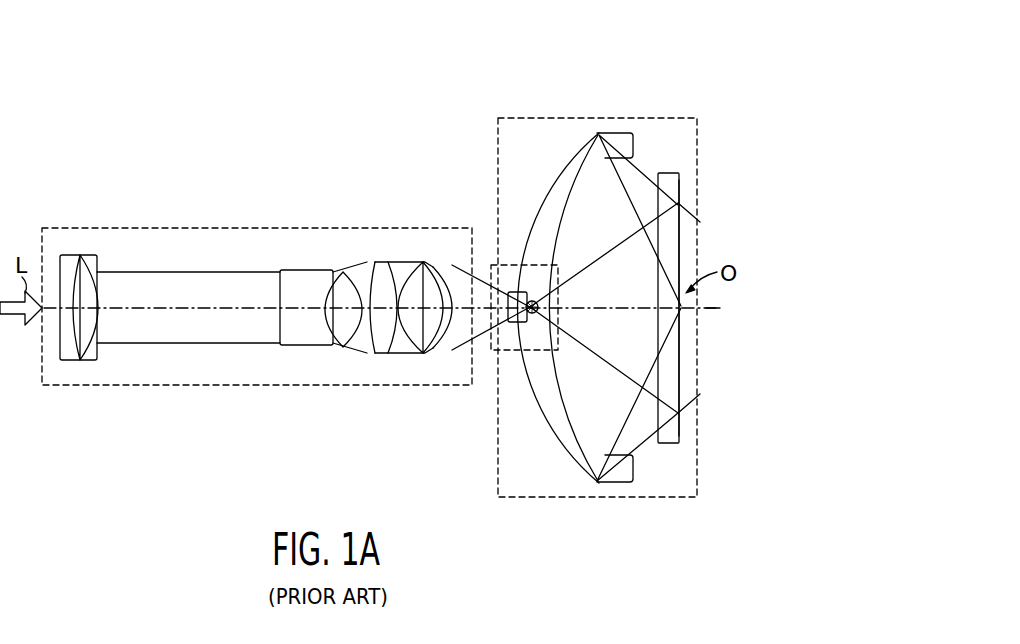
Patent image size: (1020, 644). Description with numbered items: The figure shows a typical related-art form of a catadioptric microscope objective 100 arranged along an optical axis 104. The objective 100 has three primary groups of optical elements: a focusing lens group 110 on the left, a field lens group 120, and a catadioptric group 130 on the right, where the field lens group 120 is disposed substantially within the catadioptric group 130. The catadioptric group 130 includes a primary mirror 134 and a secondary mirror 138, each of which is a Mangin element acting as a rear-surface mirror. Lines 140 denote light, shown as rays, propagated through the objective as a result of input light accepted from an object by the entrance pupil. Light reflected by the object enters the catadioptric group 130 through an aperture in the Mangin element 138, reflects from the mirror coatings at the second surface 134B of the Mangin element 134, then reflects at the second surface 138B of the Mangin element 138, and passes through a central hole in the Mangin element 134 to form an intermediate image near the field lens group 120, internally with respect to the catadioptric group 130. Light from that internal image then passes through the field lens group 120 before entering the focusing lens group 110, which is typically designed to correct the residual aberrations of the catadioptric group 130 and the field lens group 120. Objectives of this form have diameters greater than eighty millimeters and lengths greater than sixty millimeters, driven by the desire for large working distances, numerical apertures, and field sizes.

The catadioptric objective 100 is at (176, 86).
The focusing lens group 110 is at (100, 228).
The field lens group 120 is at (494, 358).
The catadioptric group 130 is at (601, 112).
The primary mirror 134 is at (562, 178).
The second surface of Mangin element 134 134B is at (576, 140).
The secondary mirror 138 is at (670, 173).
The second surface of Mangin element 138 138B is at (686, 402).
The lines denoting light rays 140 is at (175, 272).
The optical axis 104 is at (708, 310).